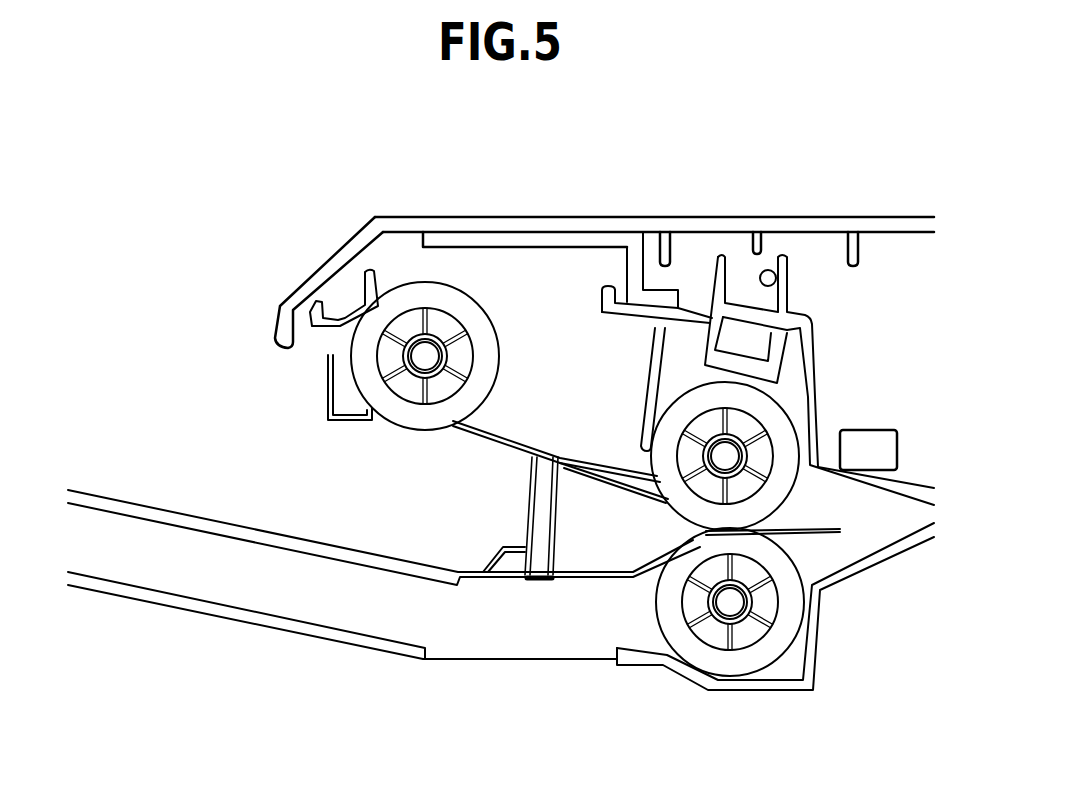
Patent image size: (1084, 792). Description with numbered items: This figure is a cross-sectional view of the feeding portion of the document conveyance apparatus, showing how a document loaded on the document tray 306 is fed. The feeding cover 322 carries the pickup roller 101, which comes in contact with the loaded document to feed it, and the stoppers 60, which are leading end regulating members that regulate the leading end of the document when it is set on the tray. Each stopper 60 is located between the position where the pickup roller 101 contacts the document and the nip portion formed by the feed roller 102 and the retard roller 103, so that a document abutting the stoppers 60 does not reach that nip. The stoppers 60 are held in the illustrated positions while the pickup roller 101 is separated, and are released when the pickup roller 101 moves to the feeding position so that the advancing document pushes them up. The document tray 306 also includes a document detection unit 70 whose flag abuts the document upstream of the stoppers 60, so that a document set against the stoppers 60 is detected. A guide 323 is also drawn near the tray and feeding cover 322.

The feeding cover 322 is at (533, 226).
The pickup roller 101 is at (405, 300).
The feed roller 102 is at (773, 418).
The retard roller 103 is at (792, 618).
The upper conveyance guide 323 is at (184, 511).
The document tray 306 is at (215, 612).
The stopper 60 is at (543, 550).
The document detection unit 70 is at (517, 605).